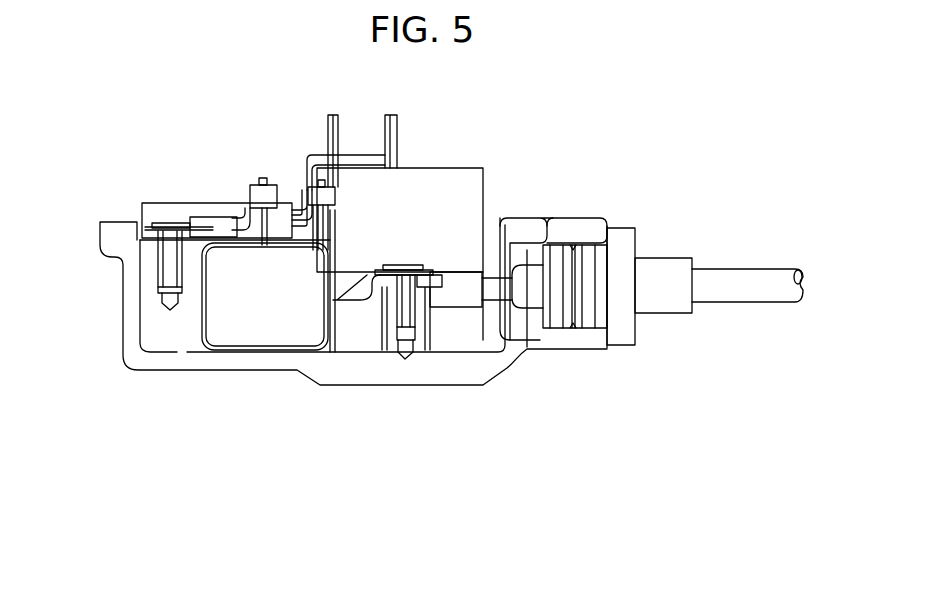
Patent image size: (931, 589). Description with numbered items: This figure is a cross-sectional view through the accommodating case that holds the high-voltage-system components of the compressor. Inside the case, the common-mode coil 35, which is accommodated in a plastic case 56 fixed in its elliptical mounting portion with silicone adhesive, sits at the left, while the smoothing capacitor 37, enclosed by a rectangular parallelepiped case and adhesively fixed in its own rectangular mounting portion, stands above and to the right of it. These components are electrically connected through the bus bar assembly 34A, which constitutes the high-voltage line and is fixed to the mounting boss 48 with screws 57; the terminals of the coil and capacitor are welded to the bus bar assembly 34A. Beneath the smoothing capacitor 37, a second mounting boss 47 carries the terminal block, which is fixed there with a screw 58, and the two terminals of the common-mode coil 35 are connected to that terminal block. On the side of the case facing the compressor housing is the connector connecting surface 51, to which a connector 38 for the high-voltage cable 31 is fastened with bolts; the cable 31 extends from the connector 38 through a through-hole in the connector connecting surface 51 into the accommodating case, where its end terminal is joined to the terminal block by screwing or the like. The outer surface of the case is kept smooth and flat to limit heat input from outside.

The high-voltage cable 31 is at (753, 283).
The bus bar assembly 34A is at (222, 208).
The common-mode coil 35 is at (218, 335).
The smoothing capacitor 37 is at (455, 203).
The connector 38 is at (618, 345).
The mounting boss 47 is at (425, 325).
The mounting boss 48 is at (150, 268).
The connector connecting surface 51 is at (608, 227).
The plastic case 56 is at (327, 310).
The screw 57 is at (167, 222).
The screw 58 is at (405, 264).